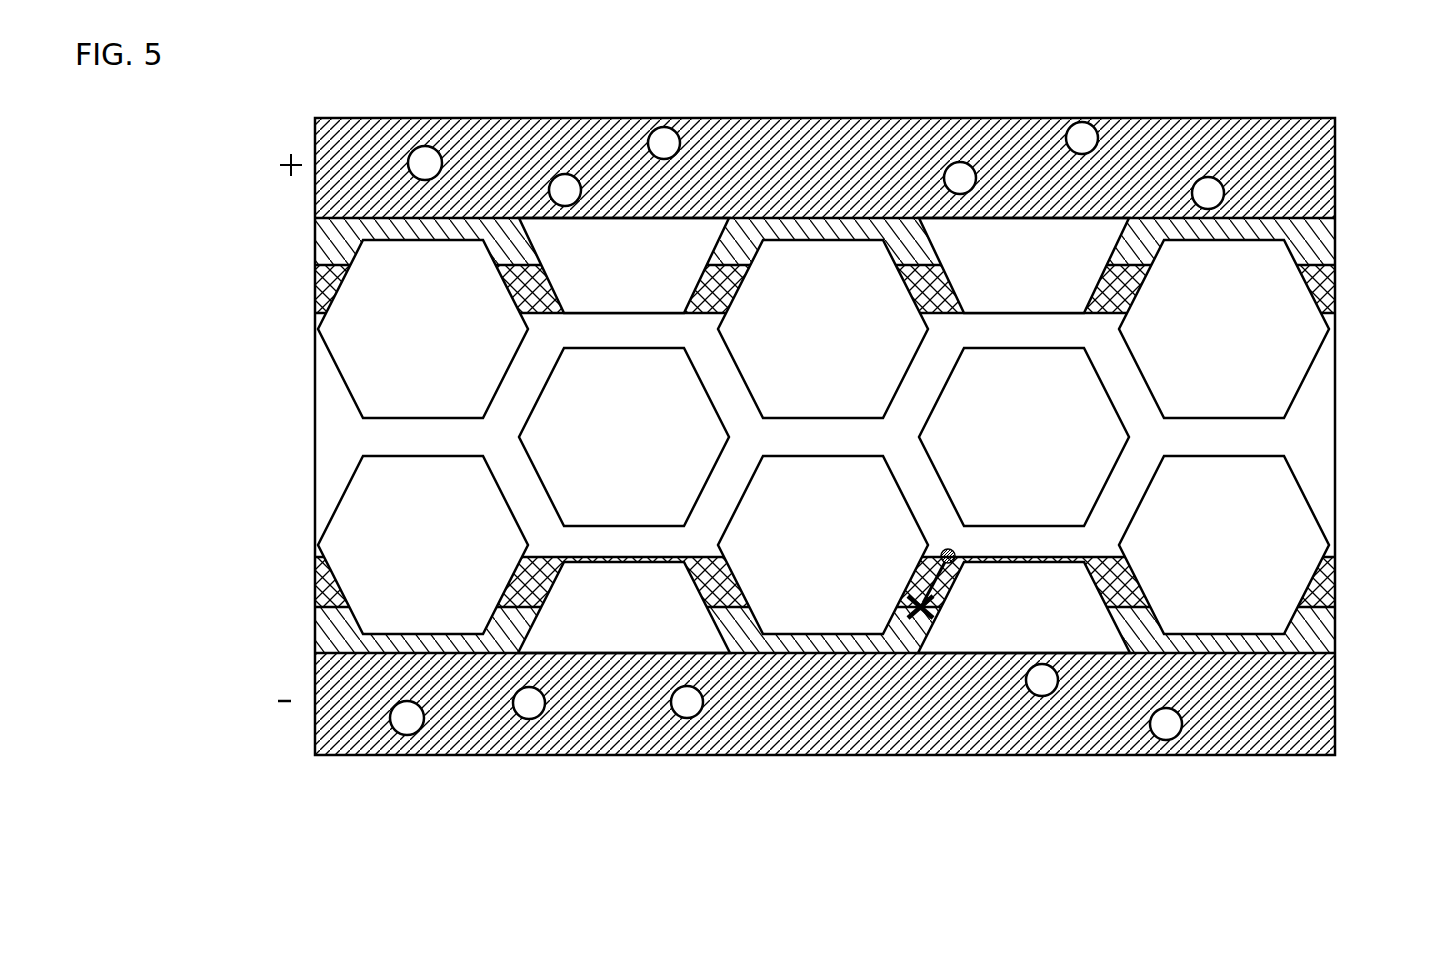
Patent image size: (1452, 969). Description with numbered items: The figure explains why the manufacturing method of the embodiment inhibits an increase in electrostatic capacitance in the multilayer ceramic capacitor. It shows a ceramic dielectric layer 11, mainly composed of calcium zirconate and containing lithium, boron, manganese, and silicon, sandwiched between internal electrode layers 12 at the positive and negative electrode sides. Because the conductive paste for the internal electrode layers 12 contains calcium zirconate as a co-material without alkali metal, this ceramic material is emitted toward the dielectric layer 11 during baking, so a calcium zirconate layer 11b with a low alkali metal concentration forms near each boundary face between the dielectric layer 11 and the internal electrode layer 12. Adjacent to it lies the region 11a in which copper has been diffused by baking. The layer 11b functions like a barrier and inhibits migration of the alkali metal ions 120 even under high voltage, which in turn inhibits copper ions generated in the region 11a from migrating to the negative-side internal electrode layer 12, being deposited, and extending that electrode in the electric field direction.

The ceramic dielectric layer 11 is at (1310, 445).
The region in which Cu has been diffused 11a is at (1320, 293).
The CaZrO3 layer 11b is at (1317, 247).
The internal electrode layer 12 is at (1315, 172).
The alkali metal ions 120 is at (955, 561).